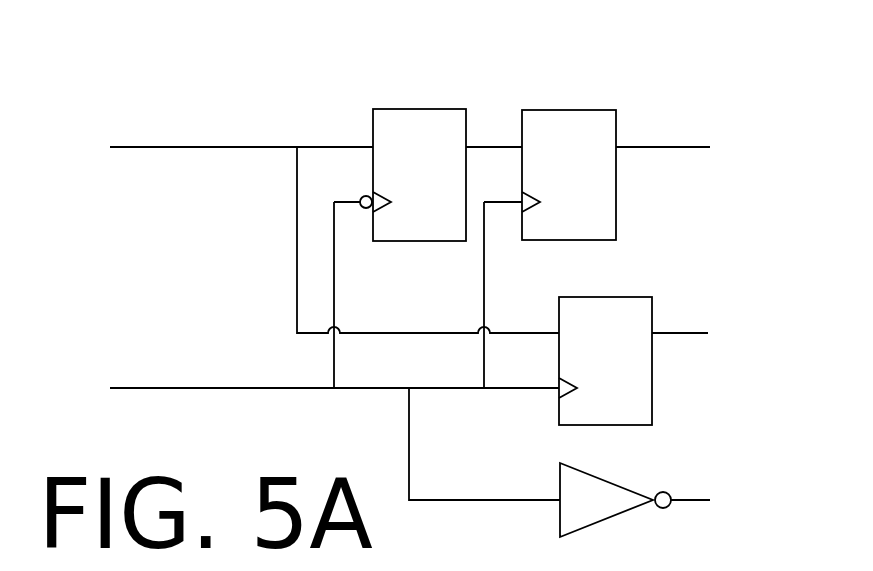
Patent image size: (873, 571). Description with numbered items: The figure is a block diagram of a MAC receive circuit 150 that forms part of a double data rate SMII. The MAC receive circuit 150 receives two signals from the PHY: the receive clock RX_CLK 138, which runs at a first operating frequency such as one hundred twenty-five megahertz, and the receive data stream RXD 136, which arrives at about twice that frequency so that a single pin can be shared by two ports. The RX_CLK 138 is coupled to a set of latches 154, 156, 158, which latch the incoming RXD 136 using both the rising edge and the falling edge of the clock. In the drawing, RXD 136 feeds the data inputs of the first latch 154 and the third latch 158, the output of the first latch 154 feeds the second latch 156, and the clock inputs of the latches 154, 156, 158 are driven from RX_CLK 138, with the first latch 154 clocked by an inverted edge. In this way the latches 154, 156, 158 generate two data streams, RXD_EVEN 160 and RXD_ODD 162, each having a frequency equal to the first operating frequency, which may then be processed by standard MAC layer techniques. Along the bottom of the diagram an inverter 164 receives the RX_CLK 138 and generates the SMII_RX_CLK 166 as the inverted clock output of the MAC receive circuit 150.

The RXD 136 is at (74, 93).
The RX_CLK 138 is at (63, 318).
The MAC receive circuit 150 is at (332, 74).
The latch 154 is at (391, 109).
The latch 156 is at (540, 110).
The latch 158 is at (607, 297).
The RXD_EVEN 160 is at (731, 76).
The RXD_ODD 162 is at (733, 279).
The inverter 164 is at (734, 426).
The SMII_RX_CLK 166 is at (585, 528).